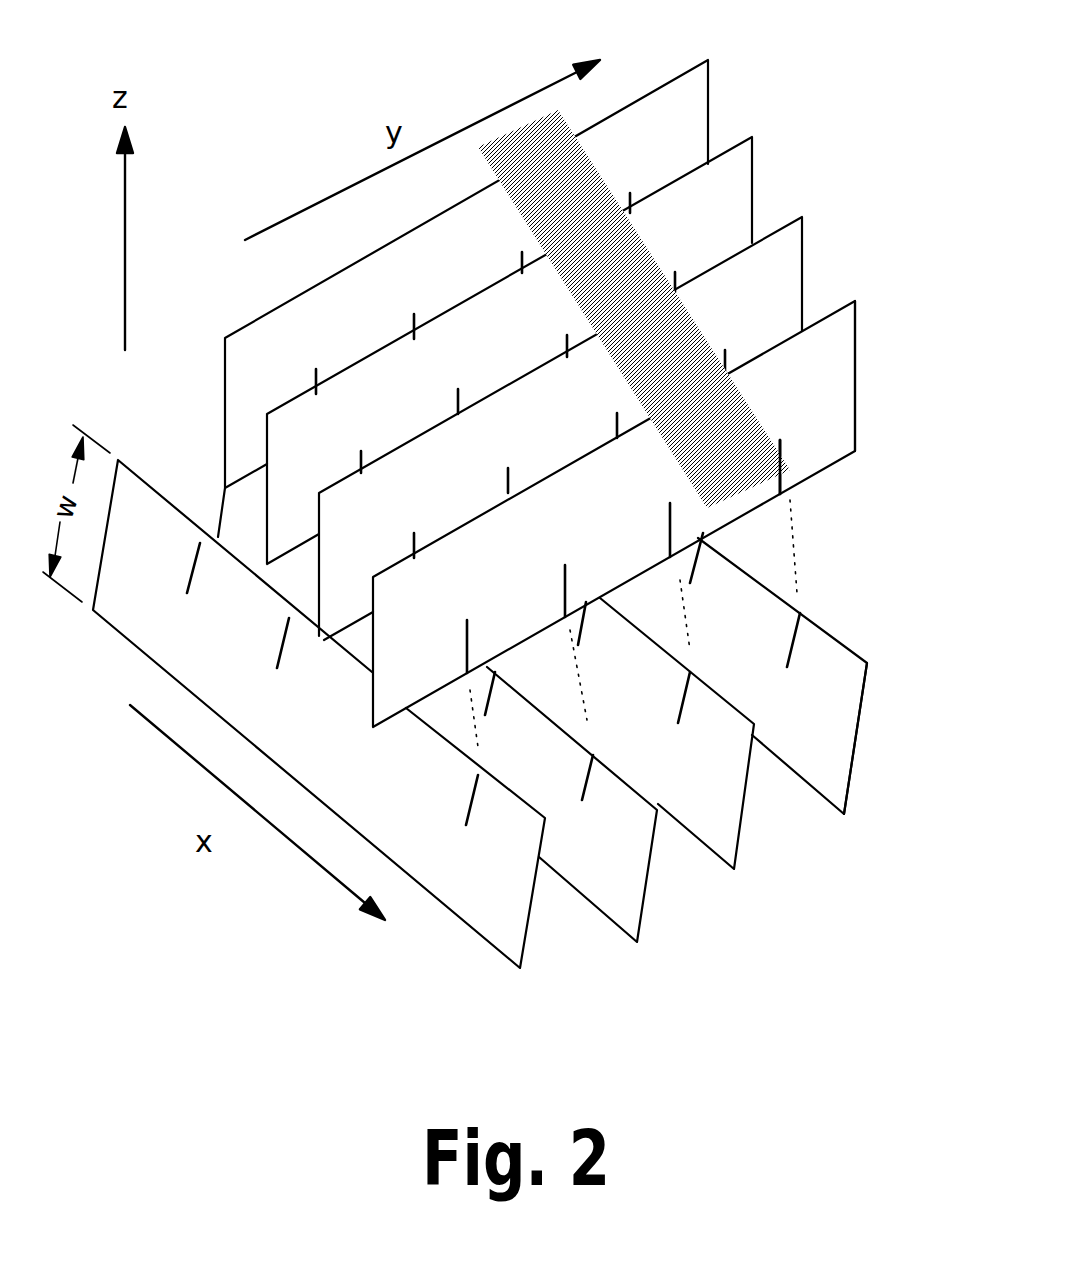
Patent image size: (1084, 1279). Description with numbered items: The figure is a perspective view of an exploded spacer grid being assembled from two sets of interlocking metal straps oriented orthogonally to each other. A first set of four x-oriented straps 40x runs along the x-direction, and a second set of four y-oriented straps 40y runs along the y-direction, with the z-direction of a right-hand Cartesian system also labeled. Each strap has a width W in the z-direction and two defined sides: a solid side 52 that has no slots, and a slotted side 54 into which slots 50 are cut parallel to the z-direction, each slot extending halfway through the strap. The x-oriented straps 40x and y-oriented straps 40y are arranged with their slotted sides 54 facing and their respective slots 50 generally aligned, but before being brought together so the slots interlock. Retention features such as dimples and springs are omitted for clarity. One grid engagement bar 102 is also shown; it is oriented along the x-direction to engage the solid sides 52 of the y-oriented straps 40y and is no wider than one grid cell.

The y-oriented straps 40y is at (834, 396).
The x-oriented straps 40x is at (836, 724).
The slots 50 is at (511, 517).
The solid side 52 is at (848, 300).
The slotted side 54 is at (842, 462).
The grid engagement bar 102 is at (729, 451).